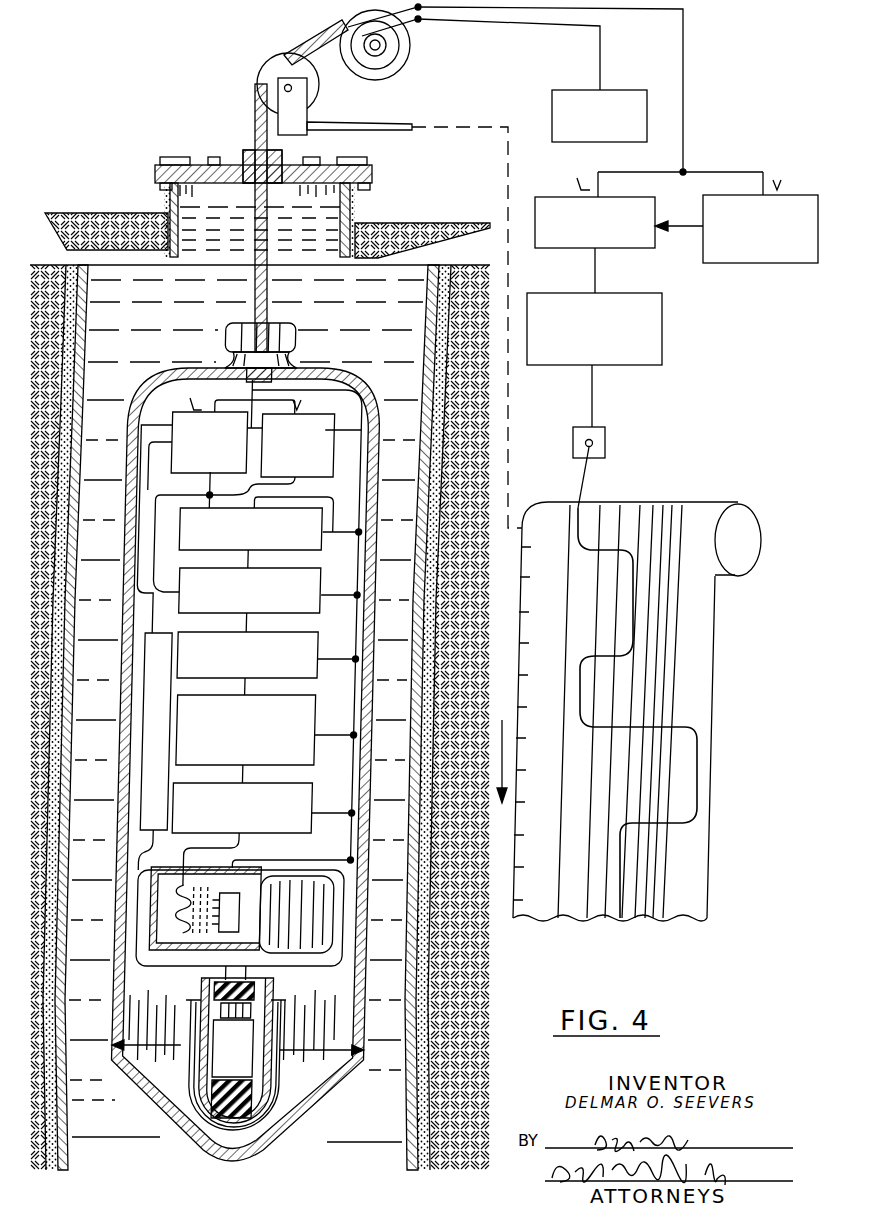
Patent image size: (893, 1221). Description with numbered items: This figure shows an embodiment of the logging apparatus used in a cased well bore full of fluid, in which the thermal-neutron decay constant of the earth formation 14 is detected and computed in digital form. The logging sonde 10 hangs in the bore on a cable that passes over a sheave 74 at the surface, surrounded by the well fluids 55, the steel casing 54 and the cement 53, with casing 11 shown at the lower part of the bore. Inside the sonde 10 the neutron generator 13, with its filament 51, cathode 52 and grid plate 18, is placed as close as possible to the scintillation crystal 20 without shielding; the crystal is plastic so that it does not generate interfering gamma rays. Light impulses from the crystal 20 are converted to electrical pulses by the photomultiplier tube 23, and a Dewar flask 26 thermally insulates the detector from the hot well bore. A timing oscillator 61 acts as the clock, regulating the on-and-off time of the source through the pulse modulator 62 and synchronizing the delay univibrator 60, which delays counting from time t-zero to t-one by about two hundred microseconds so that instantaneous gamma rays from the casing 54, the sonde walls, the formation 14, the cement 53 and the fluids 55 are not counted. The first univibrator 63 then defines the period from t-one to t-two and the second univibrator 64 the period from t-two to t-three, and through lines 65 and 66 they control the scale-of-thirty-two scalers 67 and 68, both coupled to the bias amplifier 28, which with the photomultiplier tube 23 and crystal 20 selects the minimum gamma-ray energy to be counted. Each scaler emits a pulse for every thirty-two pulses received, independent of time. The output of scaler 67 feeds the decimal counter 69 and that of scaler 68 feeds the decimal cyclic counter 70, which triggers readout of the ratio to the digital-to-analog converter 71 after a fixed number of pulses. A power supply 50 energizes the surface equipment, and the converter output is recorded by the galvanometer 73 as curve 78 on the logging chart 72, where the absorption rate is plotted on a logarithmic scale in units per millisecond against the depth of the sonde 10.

The sonde 10 is at (380, 718).
The well casing 11 is at (425, 1119).
The neutron generator 13 is at (346, 935).
The earth formation 14 is at (482, 620).
The grid plate 18 is at (195, 869).
The scintillation crystal 20 is at (270, 1105).
The photomultiplier tube 23 is at (230, 1067).
The Dewar flask 26 is at (206, 1016).
The bias amplifier 28 is at (172, 638).
The power supply 50 is at (572, 88).
The filament 51 is at (253, 928).
The cathode 52 is at (258, 898).
The cement 53 is at (70, 348).
The casing 54 is at (84, 386).
The well fluids 55 is at (104, 1118).
The delay univibrator 60 is at (307, 678).
The timing oscillator 61 is at (305, 765).
The pulse modulator 62 is at (300, 833).
The univibrator No. 1 63 is at (308, 613).
The univibrator No. 2 64 is at (312, 550).
The line 65 is at (158, 485).
The line 66 is at (337, 521).
The scaler 67 is at (188, 409).
The scaler 68 is at (306, 480).
The decimal counter 69 is at (624, 250).
The decimal cyclic counter 70 is at (762, 265).
The digital-to-analog converter 71 is at (662, 338).
The logging chart 72 is at (713, 640).
The galvanometer 73 is at (605, 440).
The cable sheave 74 is at (270, 62).
The curve 78 is at (690, 727).